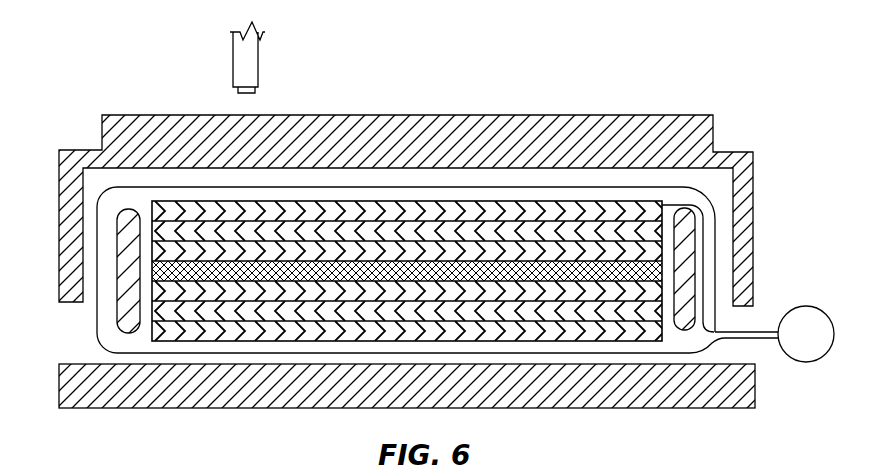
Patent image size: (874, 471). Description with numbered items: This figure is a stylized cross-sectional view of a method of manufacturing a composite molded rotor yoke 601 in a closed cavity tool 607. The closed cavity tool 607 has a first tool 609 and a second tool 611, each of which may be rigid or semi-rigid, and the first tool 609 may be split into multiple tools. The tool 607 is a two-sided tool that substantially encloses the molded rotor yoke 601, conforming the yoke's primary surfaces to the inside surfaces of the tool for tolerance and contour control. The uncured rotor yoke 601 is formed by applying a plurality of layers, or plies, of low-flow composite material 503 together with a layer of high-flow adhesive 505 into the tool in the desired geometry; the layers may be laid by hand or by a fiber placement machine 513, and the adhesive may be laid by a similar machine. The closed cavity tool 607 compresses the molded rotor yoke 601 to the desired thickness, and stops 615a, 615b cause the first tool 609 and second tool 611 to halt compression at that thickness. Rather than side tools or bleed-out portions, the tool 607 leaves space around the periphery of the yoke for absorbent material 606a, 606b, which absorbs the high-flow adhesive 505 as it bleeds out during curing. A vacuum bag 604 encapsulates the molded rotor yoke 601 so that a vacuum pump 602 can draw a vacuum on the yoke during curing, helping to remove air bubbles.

The low-flow composite material 503 is at (663, 225).
The high-flow adhesive 505 is at (152, 272).
The fiber placement machine 513 is at (258, 78).
The composite molded rotor yoke 601 is at (448, 298).
The vacuum pump 602 is at (788, 306).
The vacuum bag 604 is at (397, 187).
The absorbent material 606a is at (133, 212).
The absorbent material 606b is at (697, 326).
The closed cavity tool 607 is at (583, 115).
The first tool 609 is at (708, 116).
The second tool 611 is at (553, 409).
The stop 615a is at (62, 255).
The stop 615b is at (753, 237).